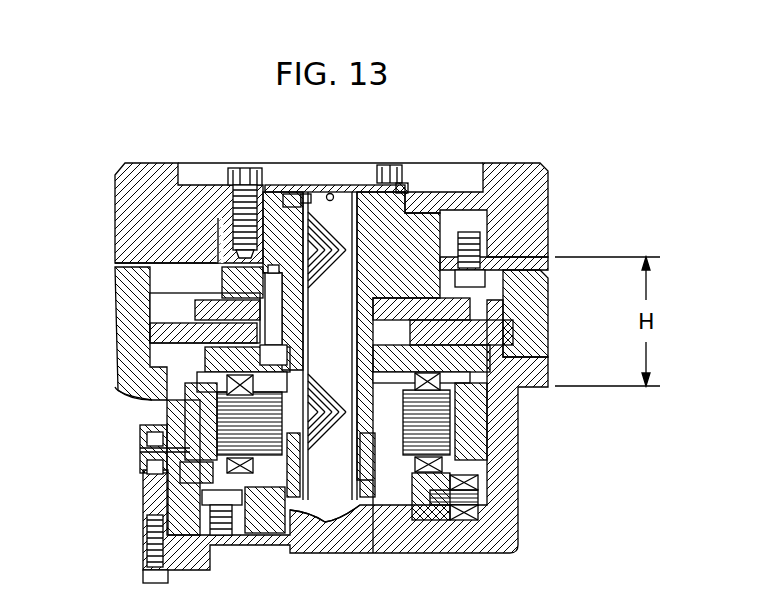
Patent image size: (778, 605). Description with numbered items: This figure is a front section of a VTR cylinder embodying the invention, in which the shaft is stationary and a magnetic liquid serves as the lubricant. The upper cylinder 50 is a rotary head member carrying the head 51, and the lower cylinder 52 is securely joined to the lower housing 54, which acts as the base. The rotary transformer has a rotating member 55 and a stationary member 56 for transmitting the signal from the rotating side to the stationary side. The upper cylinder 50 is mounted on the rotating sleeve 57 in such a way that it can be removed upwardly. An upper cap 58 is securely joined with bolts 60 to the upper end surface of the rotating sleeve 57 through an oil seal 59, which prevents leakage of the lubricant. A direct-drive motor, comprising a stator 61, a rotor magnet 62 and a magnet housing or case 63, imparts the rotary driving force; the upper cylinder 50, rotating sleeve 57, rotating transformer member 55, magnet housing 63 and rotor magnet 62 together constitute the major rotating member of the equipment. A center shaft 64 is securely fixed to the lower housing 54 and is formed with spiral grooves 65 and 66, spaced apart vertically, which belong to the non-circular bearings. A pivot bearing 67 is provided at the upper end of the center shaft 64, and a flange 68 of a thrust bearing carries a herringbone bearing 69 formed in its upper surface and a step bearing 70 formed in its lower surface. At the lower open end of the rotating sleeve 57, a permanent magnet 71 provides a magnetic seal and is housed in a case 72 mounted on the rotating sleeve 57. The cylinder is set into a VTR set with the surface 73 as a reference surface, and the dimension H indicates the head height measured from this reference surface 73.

The upper cylinder 50 is at (573, 186).
The head 51 is at (537, 258).
The lower cylinder 52 is at (530, 322).
The lower housing 54 is at (510, 475).
The rotating member of rotary transformer 55 is at (200, 310).
The stationary member of rotary transformer 56 is at (165, 333).
The rotating sleeve 57 is at (390, 323).
The upper cap 58 is at (262, 182).
The oil seal 59 is at (402, 183).
The bolts 60 is at (388, 166).
The stator 61 is at (267, 433).
The rotor magnet 62 is at (190, 448).
The magnet housing 63 is at (170, 413).
The center shaft 64 is at (333, 505).
The spiral groove 65 is at (330, 270).
The spiral groove 66 is at (337, 392).
The pivot bearing 67 is at (347, 184).
The flange of thrust bearing 68 is at (291, 194).
The herringbone bearing 69 is at (330, 193).
The step bearing 70 is at (307, 195).
The permanent magnet 71 is at (375, 553).
The case 72 is at (363, 460).
The reference surface 73 is at (122, 393).